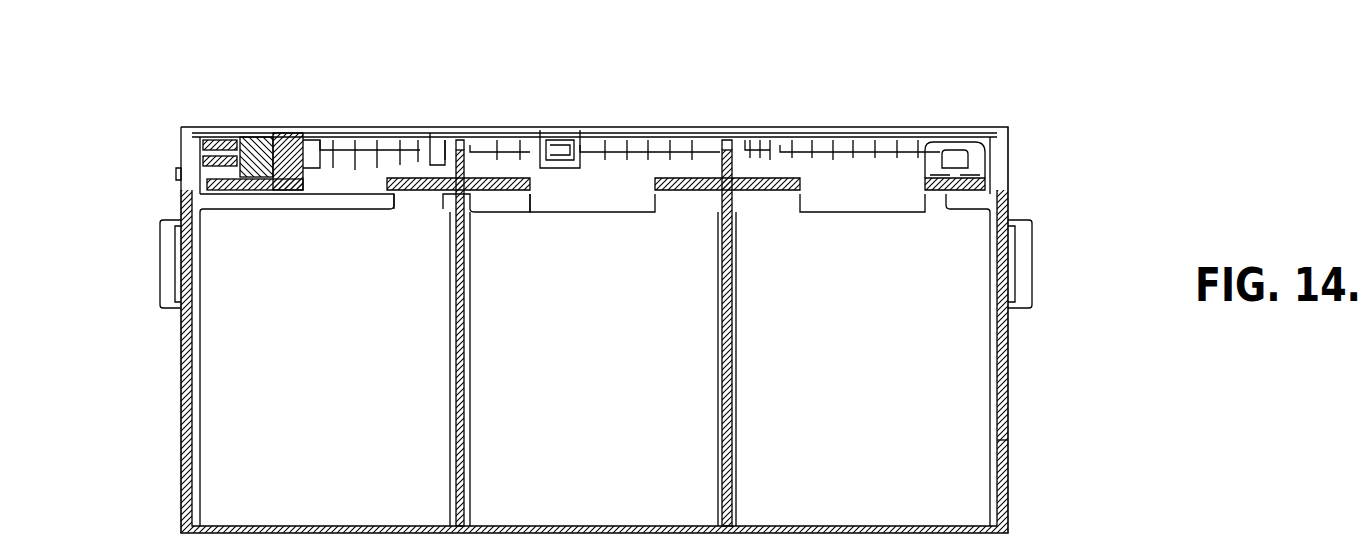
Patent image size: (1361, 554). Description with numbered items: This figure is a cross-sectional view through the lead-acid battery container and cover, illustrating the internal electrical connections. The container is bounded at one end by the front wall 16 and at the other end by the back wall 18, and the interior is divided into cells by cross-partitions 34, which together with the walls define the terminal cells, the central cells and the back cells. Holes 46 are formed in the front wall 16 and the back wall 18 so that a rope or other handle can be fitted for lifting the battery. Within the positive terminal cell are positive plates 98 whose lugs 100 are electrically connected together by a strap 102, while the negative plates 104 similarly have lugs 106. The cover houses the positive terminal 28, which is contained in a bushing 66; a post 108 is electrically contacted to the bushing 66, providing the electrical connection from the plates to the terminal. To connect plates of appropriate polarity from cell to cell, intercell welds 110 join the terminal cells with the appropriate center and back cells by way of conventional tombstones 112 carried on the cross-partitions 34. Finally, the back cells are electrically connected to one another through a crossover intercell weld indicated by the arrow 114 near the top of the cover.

The front wall 16 is at (181, 372).
The back wall 18 is at (1008, 420).
The positive terminal 28 is at (195, 127).
The cross-partition 34 is at (464, 441).
The holes 46 is at (150, 244).
The bushing 66 is at (255, 127).
The positive plates 98 is at (335, 381).
The lugs 100 is at (181, 170).
The strap 102 is at (432, 127).
The negative plates 104 is at (898, 391).
The lugs 106 is at (1008, 192).
The post 108 is at (290, 127).
The intercell welds 110 is at (472, 118).
The tombstones 112 is at (478, 165).
The crossover intercell weld 114 is at (973, 118).